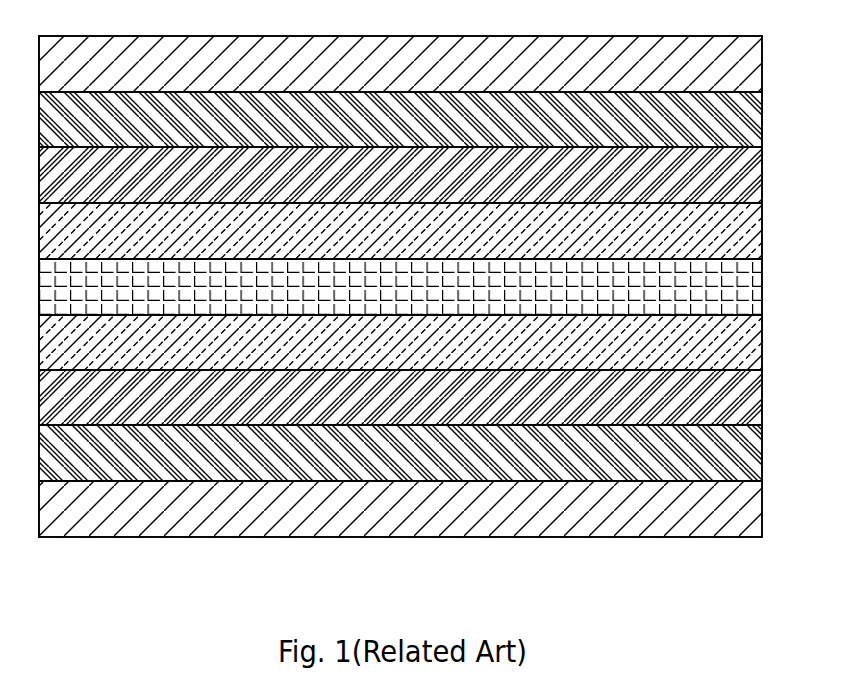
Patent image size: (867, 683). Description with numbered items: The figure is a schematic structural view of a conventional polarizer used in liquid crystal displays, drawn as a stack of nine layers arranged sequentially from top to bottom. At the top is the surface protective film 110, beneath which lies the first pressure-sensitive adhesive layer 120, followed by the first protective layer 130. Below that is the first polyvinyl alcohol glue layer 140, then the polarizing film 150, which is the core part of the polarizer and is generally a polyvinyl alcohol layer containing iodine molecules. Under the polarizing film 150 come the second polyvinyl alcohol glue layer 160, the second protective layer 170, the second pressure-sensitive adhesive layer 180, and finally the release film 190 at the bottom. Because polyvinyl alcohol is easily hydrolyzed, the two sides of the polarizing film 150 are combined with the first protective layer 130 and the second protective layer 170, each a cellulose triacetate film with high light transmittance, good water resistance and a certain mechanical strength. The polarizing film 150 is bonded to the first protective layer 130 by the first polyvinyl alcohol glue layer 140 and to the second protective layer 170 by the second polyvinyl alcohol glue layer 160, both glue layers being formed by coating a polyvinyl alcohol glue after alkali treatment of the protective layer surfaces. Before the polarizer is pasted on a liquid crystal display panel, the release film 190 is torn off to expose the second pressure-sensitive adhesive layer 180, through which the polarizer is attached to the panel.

The surface protective film 110 is at (751, 65).
The first pressure-sensitive adhesive layer 120 is at (751, 121).
The first protective layer 130 is at (751, 177).
The first polyvinyl alcohol glue layer 140 is at (751, 233).
The polarizing film 150 is at (751, 287).
The second polyvinyl alcohol glue layer 160 is at (751, 343).
The second protective layer 170 is at (751, 399).
The second pressure-sensitive adhesive layer 180 is at (751, 454).
The release film 190 is at (751, 510).